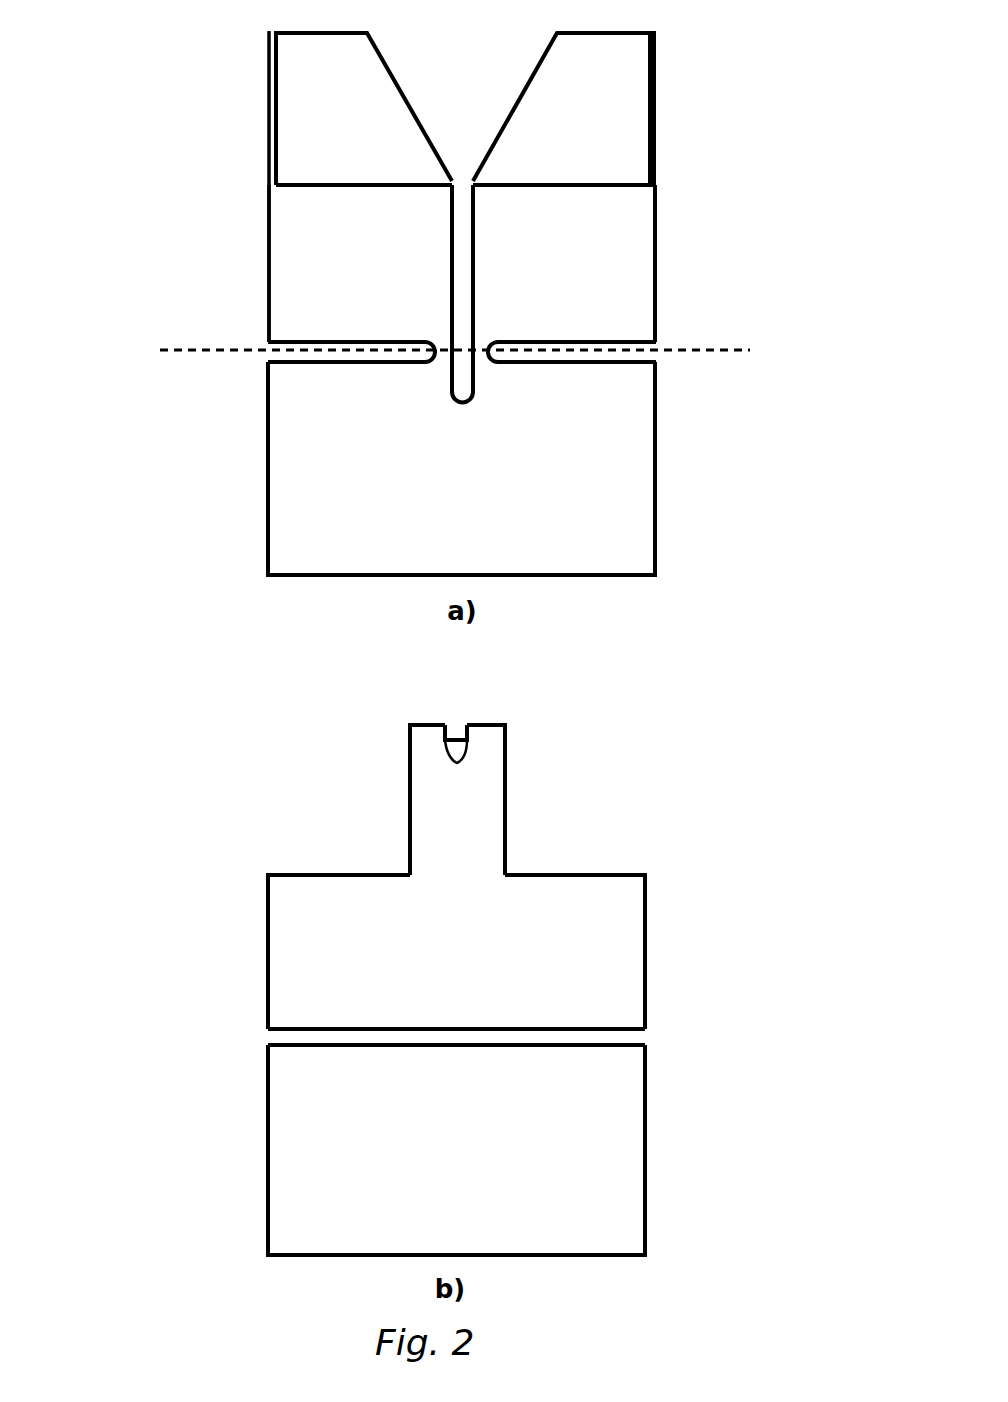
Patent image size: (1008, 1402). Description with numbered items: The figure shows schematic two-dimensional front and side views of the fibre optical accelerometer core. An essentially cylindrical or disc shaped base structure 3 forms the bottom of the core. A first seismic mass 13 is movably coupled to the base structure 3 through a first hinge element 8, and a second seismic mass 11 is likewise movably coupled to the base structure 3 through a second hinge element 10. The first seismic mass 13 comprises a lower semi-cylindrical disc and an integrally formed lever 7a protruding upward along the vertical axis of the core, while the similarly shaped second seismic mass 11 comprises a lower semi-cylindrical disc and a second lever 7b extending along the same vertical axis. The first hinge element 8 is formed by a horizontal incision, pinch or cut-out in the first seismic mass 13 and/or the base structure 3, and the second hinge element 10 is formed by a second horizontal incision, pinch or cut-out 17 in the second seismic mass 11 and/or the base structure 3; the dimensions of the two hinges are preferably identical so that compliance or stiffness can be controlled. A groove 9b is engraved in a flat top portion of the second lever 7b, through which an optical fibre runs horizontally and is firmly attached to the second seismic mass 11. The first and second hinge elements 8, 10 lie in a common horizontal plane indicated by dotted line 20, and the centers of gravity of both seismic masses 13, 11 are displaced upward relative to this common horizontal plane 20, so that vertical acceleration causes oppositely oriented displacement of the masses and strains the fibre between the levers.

The base structure 3 is at (645, 497).
The lever 7a is at (633, 90).
The second lever 7b is at (283, 102).
The first hinge element 8 is at (477, 353).
The groove 9b is at (457, 723).
The second hinge element 10 is at (440, 353).
The second seismic mass 11 is at (280, 268).
The first seismic mass 13 is at (643, 257).
The second horizontal incision 17 is at (283, 1040).
The common horizontal plane 20 is at (160, 350).